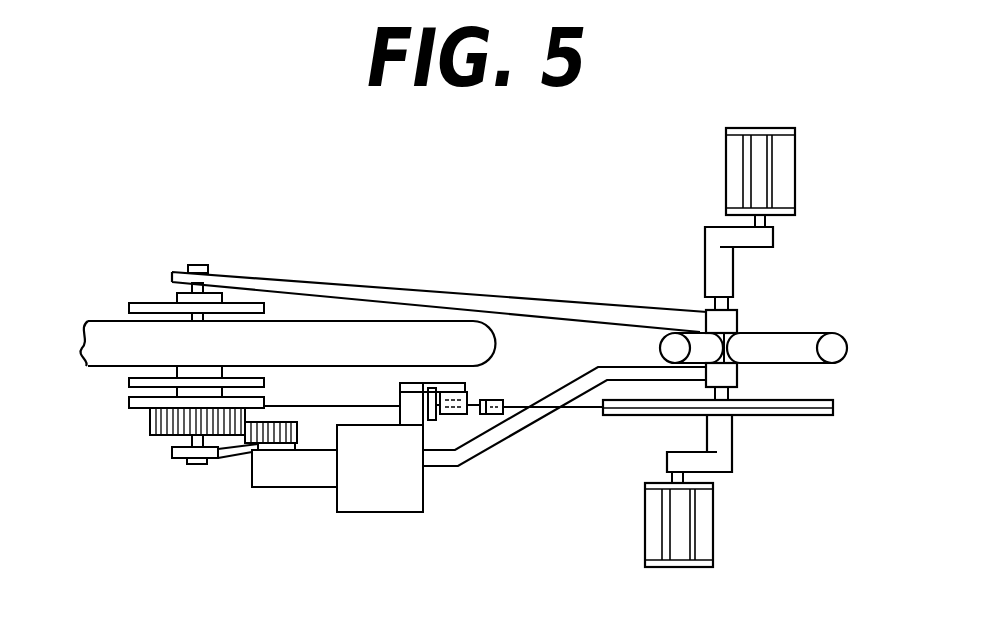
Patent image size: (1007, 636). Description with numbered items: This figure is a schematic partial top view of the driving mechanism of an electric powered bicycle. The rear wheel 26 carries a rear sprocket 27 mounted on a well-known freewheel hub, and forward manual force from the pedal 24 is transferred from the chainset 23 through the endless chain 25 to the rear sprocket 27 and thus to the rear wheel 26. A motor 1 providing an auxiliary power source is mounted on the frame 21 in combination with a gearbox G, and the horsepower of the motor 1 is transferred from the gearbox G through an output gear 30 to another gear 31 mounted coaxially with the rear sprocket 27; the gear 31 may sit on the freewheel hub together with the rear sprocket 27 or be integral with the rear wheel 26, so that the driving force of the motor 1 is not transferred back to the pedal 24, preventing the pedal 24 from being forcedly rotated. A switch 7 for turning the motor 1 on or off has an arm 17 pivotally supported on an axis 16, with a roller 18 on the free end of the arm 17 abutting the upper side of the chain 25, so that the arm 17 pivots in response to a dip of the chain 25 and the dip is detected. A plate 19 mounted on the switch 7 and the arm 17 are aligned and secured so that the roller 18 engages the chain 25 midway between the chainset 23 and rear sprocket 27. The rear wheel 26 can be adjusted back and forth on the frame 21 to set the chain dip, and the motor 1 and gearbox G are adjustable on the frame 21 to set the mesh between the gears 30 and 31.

The motor 1 is at (372, 490).
The switch 7 is at (468, 396).
The axis 16 is at (400, 387).
The arm 17 is at (505, 386).
The roller 18 is at (500, 416).
The plate 19 is at (440, 385).
The frame 21 is at (472, 453).
The chainset 23 is at (833, 403).
The pedal 24 is at (703, 533).
The chain 25 is at (588, 413).
The rear wheel 26 is at (110, 333).
The rear sprocket 27 is at (130, 410).
The output gear 30 is at (250, 445).
The gear 31 is at (152, 425).
The gearbox G is at (295, 473).